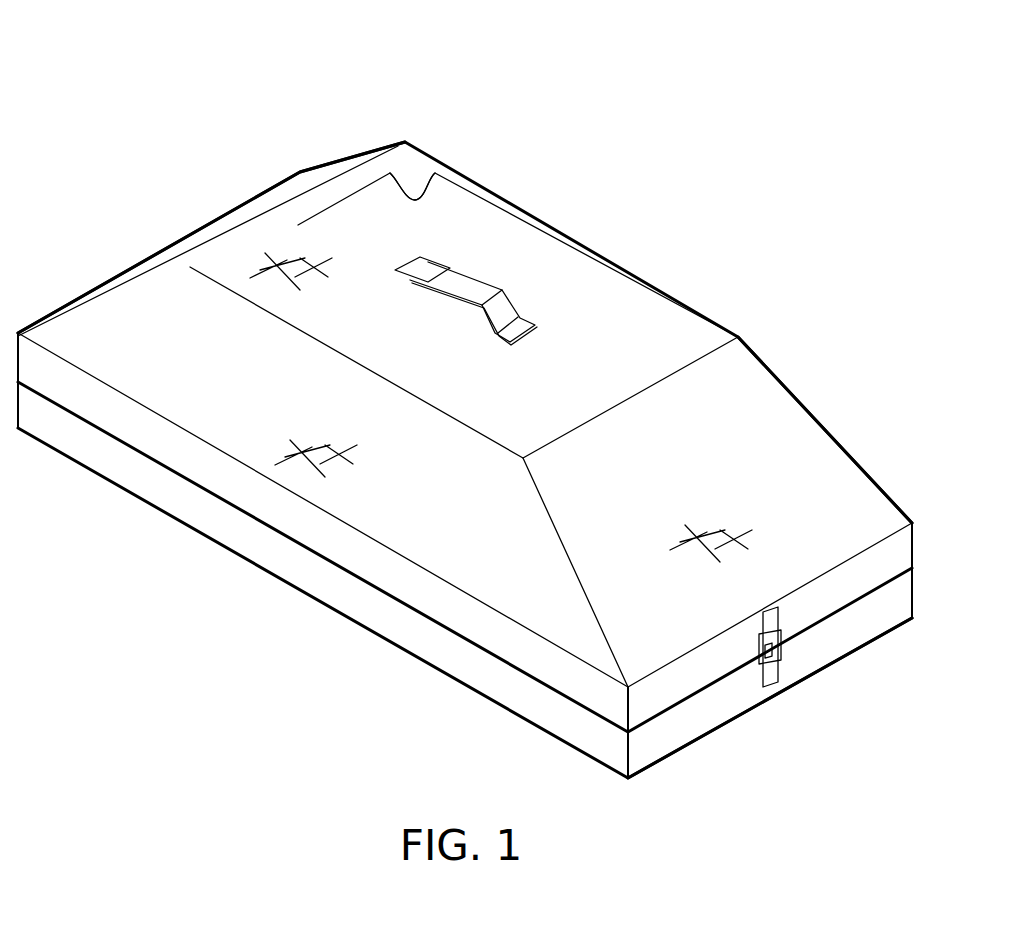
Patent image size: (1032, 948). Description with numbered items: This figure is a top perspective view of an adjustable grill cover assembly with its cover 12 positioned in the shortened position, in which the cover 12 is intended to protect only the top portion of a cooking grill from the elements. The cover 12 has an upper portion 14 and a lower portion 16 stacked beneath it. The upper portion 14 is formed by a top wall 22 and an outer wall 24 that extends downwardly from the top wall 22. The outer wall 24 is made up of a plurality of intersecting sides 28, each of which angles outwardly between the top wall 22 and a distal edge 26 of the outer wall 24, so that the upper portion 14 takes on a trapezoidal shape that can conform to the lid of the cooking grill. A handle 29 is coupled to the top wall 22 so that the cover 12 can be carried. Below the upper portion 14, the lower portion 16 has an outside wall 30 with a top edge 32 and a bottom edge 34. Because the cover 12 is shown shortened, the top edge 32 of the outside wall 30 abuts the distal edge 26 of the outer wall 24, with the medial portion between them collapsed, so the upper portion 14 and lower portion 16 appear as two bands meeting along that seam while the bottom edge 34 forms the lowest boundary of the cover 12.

The cover 12 is at (477, 401).
The upper portion 14 is at (469, 347).
The lower portion 16 is at (477, 563).
The top wall 22 is at (588, 284).
The outer wall 24 is at (768, 427).
The distal edge 26 is at (713, 682).
The intersecting sides 28 is at (183, 313).
The handle 29 is at (440, 262).
The outside wall 30 is at (898, 600).
The top edge 32 is at (884, 584).
The bottom edge 34 is at (873, 641).